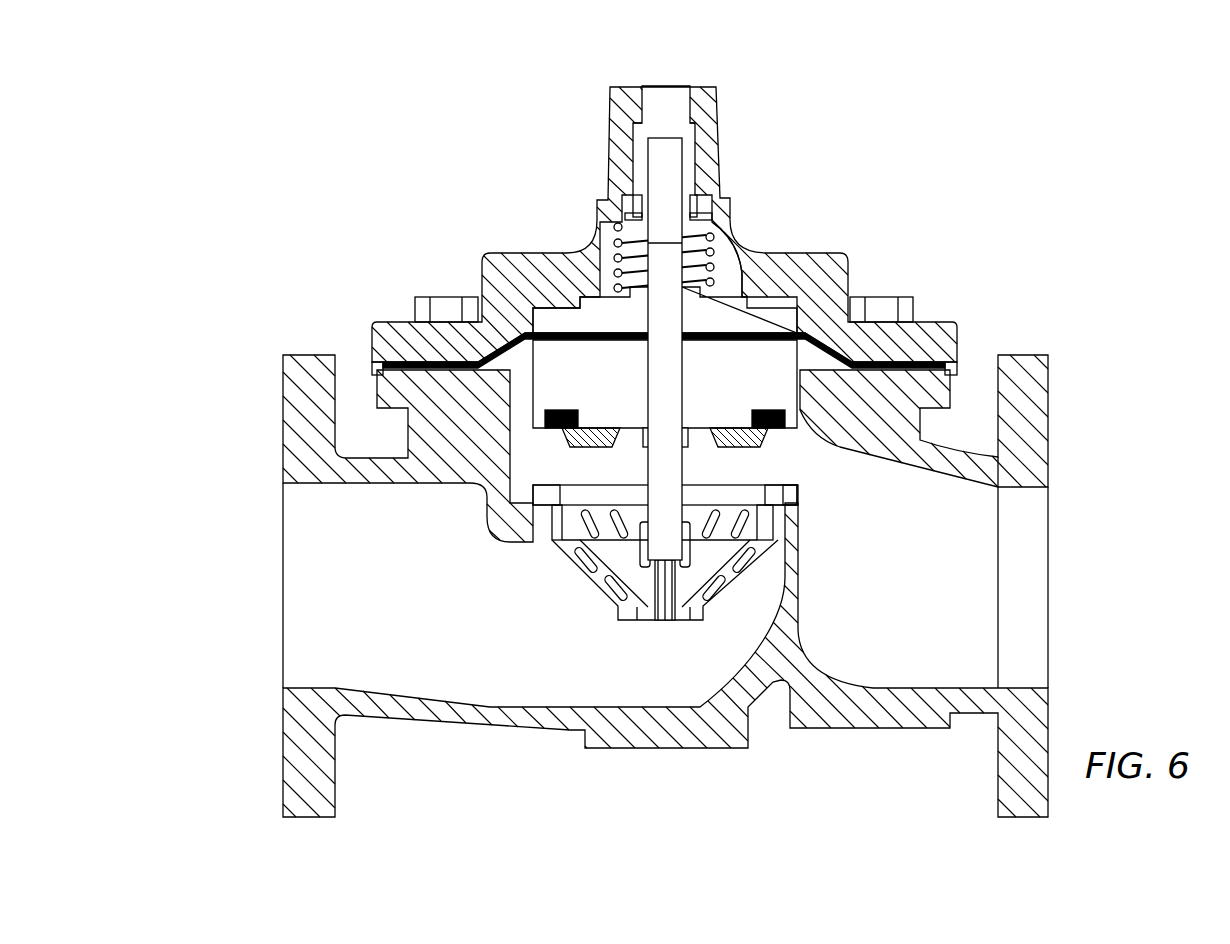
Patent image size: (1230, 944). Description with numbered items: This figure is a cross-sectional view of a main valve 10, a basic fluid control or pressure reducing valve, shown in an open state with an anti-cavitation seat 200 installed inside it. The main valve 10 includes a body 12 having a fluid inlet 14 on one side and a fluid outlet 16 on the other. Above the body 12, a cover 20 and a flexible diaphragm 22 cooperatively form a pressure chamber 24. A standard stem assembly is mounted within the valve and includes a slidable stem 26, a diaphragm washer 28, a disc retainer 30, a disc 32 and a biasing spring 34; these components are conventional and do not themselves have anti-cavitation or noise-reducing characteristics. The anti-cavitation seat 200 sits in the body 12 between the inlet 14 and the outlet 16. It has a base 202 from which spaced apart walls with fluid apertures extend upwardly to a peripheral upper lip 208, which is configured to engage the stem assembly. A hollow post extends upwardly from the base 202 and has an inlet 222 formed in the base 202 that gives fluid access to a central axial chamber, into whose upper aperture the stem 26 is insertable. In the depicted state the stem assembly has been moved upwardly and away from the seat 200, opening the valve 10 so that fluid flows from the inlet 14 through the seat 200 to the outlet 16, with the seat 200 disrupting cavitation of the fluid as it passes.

The main valve 10 is at (342, 263).
The body 12 is at (855, 700).
The fluid inlet 14 is at (320, 560).
The fluid outlet 16 is at (1023, 627).
The cover 20 is at (825, 278).
The flexible diaphragm 22 is at (852, 362).
The pressure chamber 24 is at (743, 280).
The stem 26 is at (665, 152).
The diaphragm washer 28 is at (596, 250).
The disc retainer 30 is at (598, 300).
The disc 32 is at (577, 372).
The biasing spring 34 is at (617, 225).
The anti-cavitation seat 200 is at (630, 659).
The base 202 is at (630, 620).
The peripheral upper lip 208 is at (783, 493).
The inlet 222 is at (668, 610).